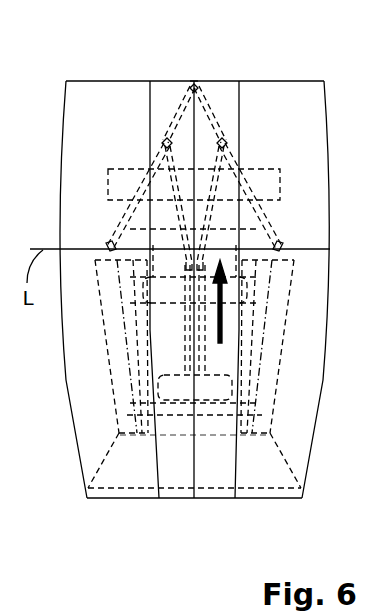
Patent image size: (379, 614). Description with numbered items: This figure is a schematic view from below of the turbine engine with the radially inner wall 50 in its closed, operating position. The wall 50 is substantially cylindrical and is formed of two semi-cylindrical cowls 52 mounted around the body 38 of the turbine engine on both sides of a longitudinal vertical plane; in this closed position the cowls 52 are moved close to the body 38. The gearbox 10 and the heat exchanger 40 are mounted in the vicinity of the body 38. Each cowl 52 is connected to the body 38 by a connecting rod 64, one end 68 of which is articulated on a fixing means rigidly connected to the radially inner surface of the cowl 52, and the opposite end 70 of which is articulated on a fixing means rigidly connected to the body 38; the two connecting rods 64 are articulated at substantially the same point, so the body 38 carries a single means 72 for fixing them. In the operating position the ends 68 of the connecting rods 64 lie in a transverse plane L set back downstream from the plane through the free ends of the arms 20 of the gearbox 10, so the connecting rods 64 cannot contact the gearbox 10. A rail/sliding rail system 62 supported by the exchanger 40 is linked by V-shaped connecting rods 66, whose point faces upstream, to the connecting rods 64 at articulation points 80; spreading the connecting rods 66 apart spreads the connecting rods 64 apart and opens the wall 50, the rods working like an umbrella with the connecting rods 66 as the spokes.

The gearbox 10 is at (283, 369).
The arms 20 is at (114, 374).
The body 38 is at (268, 232).
The exchanger 40 is at (211, 412).
The wall 50 is at (327, 328).
The cowls 52 is at (92, 433).
The rail/sliding rail system 62 is at (170, 332).
The connecting rod 64 is at (178, 118).
The connecting rods 66 is at (174, 181).
The end 68 is at (107, 247).
The opposite end 70 is at (196, 83).
The single means for fixing 72 is at (192, 83).
The joint 80 is at (166, 141).